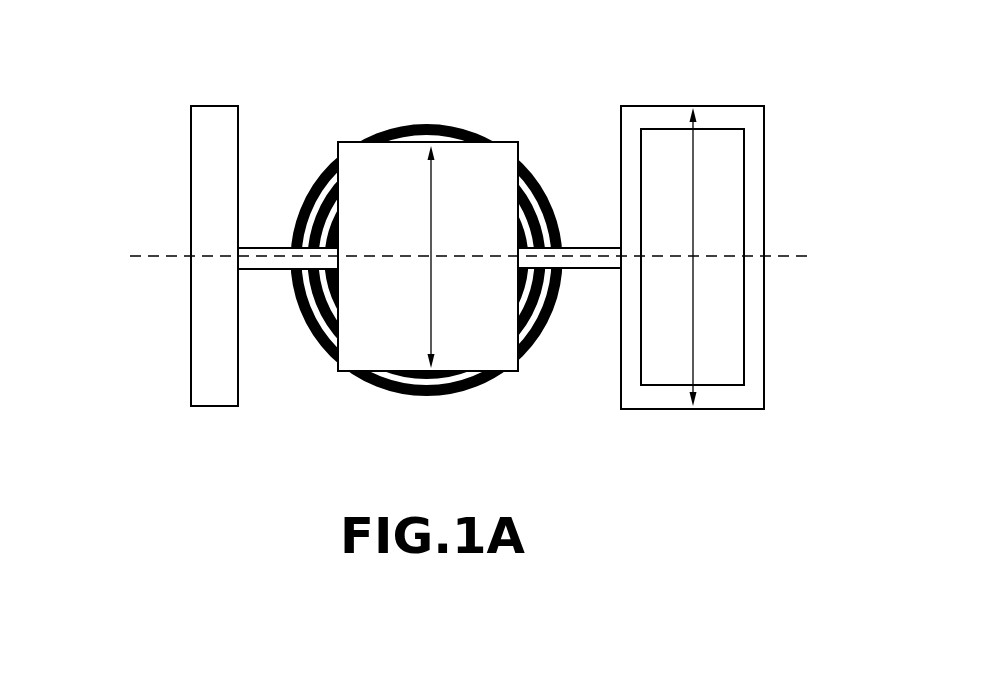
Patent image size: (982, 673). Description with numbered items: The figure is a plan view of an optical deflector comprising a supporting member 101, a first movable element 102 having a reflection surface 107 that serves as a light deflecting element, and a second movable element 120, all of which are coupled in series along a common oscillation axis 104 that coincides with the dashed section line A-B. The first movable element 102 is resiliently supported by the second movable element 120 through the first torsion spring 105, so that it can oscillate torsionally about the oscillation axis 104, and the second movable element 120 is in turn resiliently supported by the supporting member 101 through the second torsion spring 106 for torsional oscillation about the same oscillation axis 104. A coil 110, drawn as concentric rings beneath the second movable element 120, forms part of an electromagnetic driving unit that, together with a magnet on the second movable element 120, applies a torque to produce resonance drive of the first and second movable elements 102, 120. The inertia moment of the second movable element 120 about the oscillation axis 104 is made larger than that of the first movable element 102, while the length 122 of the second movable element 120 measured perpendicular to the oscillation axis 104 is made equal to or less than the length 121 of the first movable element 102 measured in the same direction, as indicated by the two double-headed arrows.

The supporting member 101 is at (200, 150).
The first movable element 102 is at (758, 150).
The oscillation axis 104 is at (780, 253).
The first torsion spring 105 is at (572, 260).
The second torsion spring 106 is at (280, 266).
The reflection surface 107 is at (668, 143).
The coil 110 is at (408, 393).
The second movable element 120 is at (460, 163).
The length of the first movable element 121 is at (693, 218).
The length of the second movable element 122 is at (428, 218).